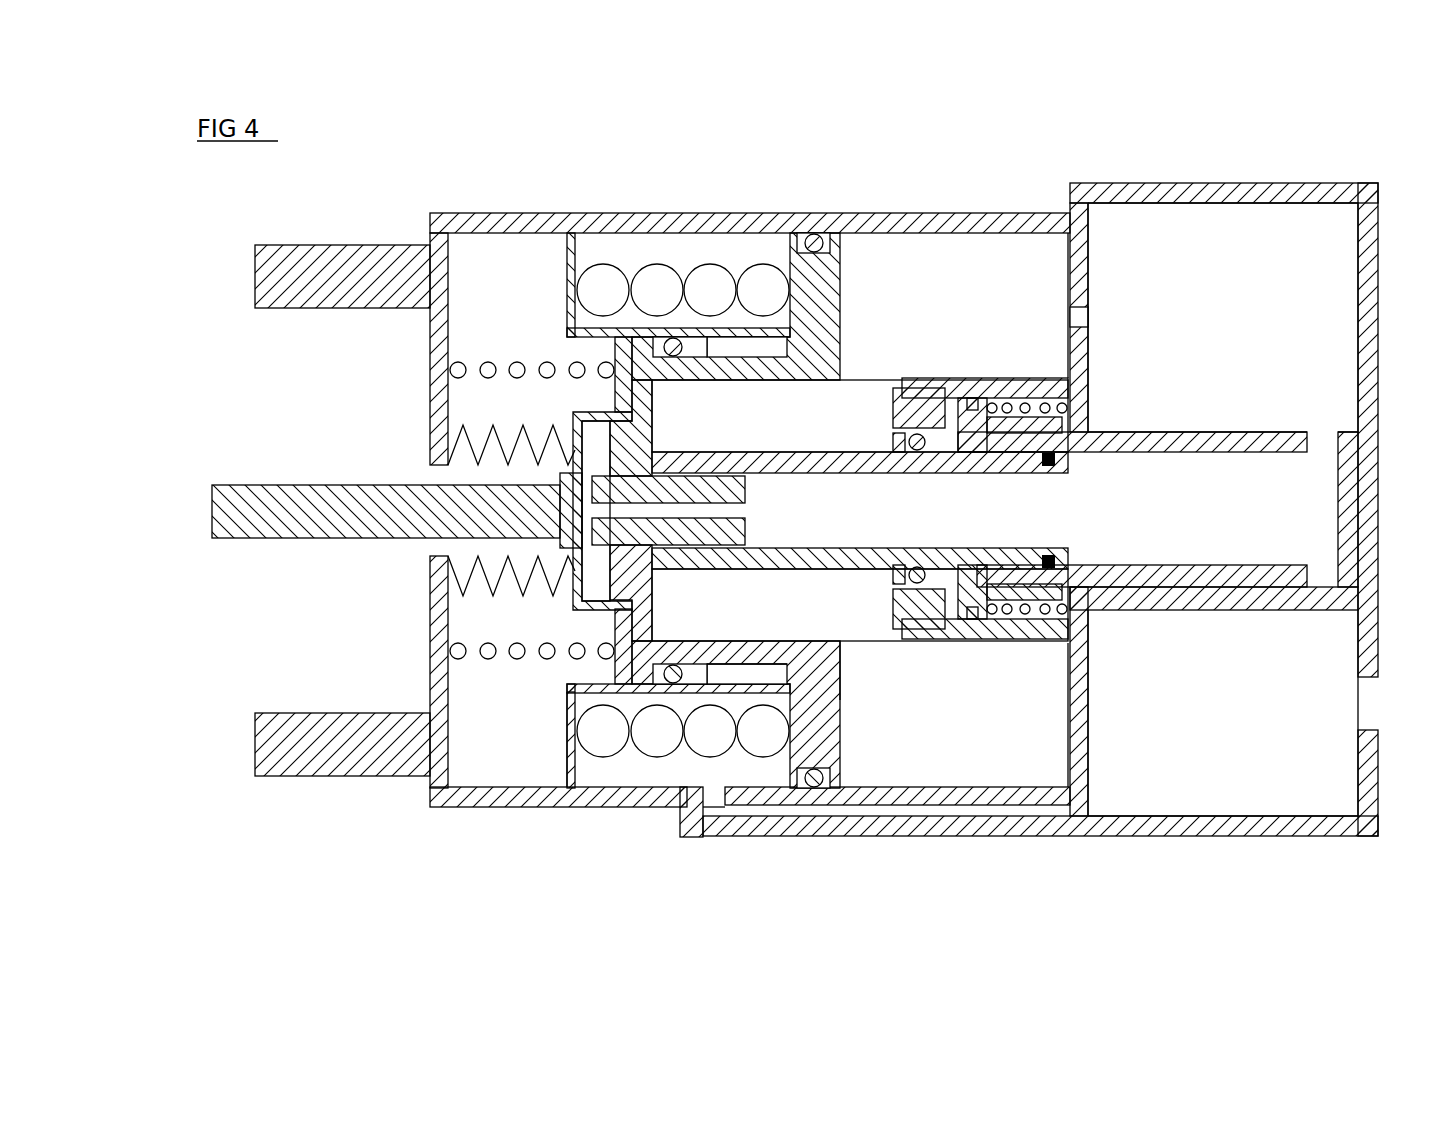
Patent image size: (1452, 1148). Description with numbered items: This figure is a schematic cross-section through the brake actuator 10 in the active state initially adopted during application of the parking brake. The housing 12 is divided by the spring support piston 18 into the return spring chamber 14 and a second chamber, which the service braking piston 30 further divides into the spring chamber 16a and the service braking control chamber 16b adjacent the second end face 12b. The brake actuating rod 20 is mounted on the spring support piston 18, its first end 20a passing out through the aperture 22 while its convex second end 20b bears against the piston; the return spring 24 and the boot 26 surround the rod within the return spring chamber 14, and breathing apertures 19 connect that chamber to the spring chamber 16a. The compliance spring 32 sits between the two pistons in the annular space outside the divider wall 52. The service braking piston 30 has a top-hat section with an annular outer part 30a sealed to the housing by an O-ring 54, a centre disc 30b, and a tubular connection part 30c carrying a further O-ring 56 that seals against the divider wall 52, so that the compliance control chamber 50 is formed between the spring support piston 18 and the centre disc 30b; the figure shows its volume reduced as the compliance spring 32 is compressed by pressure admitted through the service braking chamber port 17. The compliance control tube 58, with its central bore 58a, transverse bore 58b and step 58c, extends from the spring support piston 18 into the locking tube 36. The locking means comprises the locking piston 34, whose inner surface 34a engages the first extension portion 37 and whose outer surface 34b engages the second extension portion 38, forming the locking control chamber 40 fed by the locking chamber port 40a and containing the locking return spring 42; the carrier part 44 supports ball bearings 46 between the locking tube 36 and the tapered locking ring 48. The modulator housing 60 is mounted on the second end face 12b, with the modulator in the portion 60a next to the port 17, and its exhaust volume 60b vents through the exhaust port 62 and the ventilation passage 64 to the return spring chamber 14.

The brake actuator 10 is at (478, 817).
The housing 12 is at (563, 814).
The second end face 12b is at (1085, 700).
The return spring chamber 14 is at (458, 800).
The spring chamber 16a is at (638, 770).
The service braking control chamber 16b is at (968, 640).
The service braking chamber port 17 is at (1083, 318).
The spring support piston 18 is at (563, 700).
The breathing apertures 19 is at (565, 262).
The brake actuating rod 20 is at (242, 530).
The first end of the rod 20a is at (252, 500).
The second end of the rod 20b is at (557, 486).
The aperture 22 is at (440, 478).
The return spring 24 is at (600, 656).
The flexible sleeve (boot) 26 is at (490, 645).
The service braking piston 30 is at (848, 680).
The annular outer part 30a is at (725, 812).
The centre disc 30b is at (660, 735).
The tubular connection part 30c is at (745, 665).
The compliance spring 32 is at (603, 750).
The locking piston 34 is at (1050, 395).
The inner surface of the locking piston 34a is at (1060, 635).
The outer surface of the locking piston 34b is at (1000, 410).
The locking tube 36 is at (895, 425).
The first tubular extension portion 37 is at (1055, 443).
The second tubular extension portion 38 is at (987, 400).
The locking control chamber 40 is at (1005, 635).
The locking chamber port 40a is at (1090, 590).
The locking return spring 42 is at (1028, 635).
The carrier part 44 is at (968, 387).
The ball bearings 46 is at (905, 590).
The locking ring 48 is at (915, 585).
The compliance control chamber 50 is at (578, 330).
The divider wall 52 is at (673, 338).
The O-ring 54 is at (814, 234).
The further O-ring 56 is at (640, 338).
The compliance control tube 58 is at (720, 478).
The central bore 58a is at (745, 512).
The transverse bore 58b is at (595, 447).
The step 58c is at (668, 548).
The modulator housing 60 is at (1213, 184).
The portion of the modulator housing 60a is at (1270, 265).
The exhaust volume 60b is at (1278, 770).
The exhaust port 62 is at (1362, 698).
The ventilation passage 64 is at (955, 760).